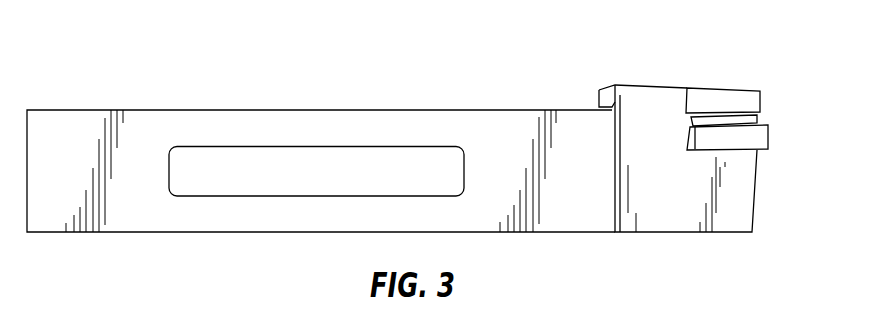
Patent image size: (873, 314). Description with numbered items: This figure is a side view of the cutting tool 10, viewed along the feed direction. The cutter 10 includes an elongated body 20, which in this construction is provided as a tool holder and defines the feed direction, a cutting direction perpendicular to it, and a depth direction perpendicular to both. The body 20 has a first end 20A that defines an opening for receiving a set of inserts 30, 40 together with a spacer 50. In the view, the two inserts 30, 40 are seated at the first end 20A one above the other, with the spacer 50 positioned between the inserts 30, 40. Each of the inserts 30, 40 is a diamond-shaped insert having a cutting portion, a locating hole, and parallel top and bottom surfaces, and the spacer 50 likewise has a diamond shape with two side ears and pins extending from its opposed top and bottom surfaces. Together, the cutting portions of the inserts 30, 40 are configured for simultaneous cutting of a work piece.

The cutting tool 10 is at (414, 145).
The body 20 is at (586, 190).
The first end 20A is at (740, 212).
The insert 30 is at (759, 101).
The insert 40 is at (768, 141).
The spacer 50 is at (757, 123).